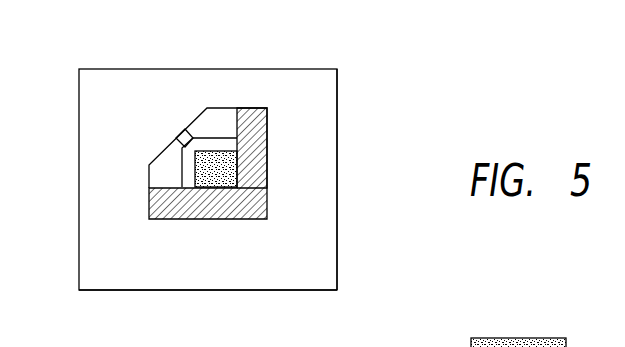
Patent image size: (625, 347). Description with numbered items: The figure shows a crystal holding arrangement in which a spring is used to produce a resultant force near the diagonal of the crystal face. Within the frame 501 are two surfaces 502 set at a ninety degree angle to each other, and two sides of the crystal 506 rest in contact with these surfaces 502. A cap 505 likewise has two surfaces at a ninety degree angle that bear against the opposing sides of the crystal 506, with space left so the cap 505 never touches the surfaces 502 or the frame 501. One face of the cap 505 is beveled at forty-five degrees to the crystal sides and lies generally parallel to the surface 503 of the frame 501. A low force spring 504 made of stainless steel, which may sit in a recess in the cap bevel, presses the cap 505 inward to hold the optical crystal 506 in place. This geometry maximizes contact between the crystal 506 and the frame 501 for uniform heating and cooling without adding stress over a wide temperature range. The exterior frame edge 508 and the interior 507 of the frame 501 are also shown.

The frame 501 is at (198, 273).
The surfaces 502 is at (160, 207).
The surface of frame 503 is at (152, 162).
The low force spring 504 is at (186, 129).
The cap 505 is at (233, 149).
The crystal 506 is at (233, 167).
The interior of frame 507 is at (310, 247).
The exterior frame edge 508 is at (337, 197).